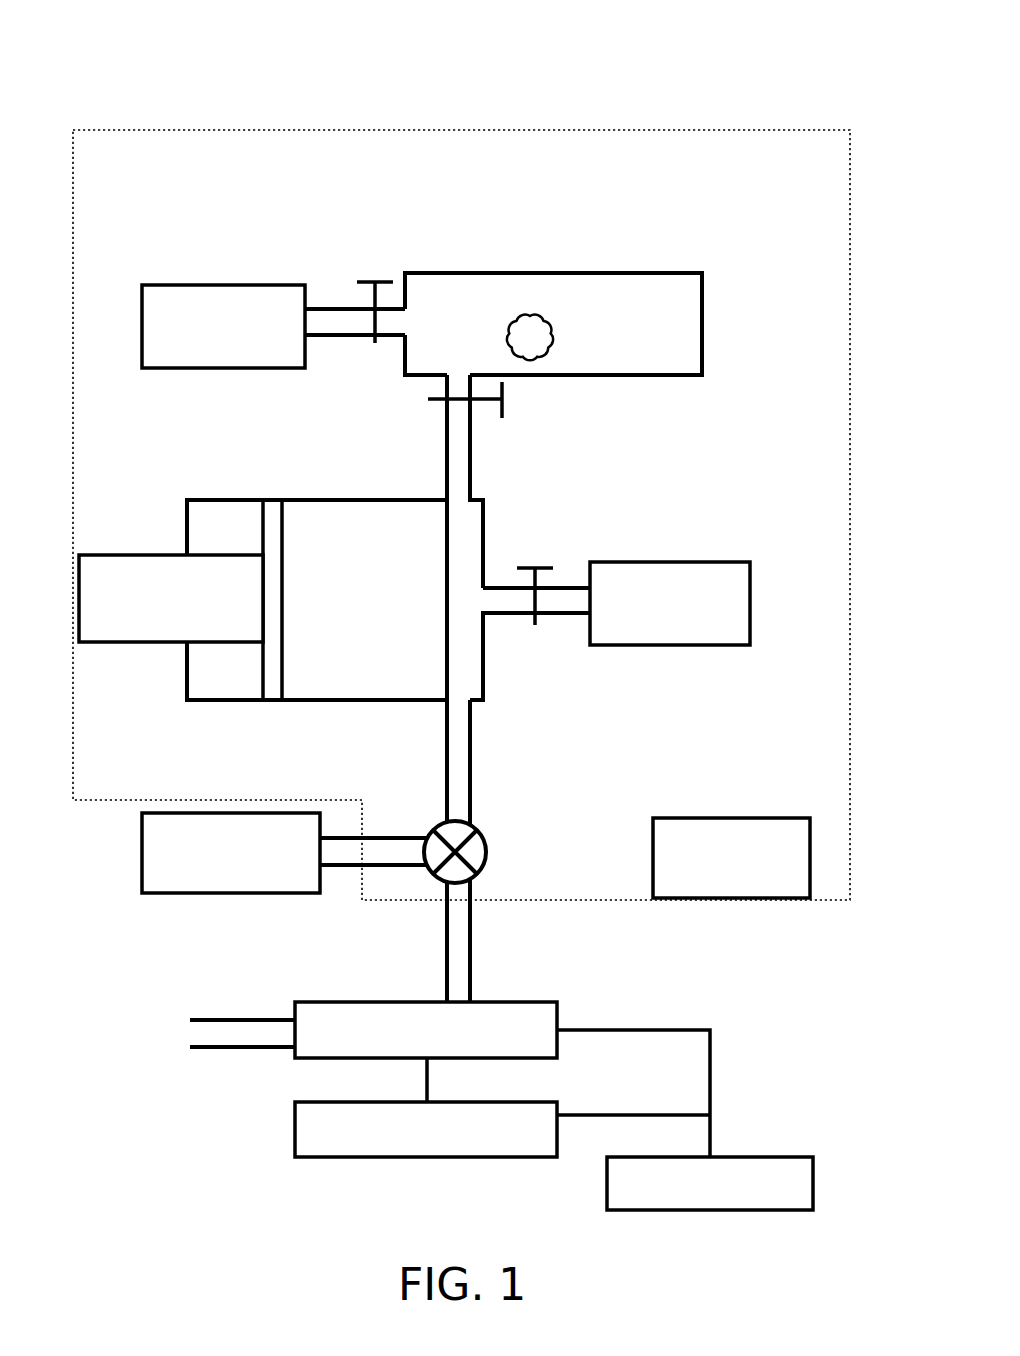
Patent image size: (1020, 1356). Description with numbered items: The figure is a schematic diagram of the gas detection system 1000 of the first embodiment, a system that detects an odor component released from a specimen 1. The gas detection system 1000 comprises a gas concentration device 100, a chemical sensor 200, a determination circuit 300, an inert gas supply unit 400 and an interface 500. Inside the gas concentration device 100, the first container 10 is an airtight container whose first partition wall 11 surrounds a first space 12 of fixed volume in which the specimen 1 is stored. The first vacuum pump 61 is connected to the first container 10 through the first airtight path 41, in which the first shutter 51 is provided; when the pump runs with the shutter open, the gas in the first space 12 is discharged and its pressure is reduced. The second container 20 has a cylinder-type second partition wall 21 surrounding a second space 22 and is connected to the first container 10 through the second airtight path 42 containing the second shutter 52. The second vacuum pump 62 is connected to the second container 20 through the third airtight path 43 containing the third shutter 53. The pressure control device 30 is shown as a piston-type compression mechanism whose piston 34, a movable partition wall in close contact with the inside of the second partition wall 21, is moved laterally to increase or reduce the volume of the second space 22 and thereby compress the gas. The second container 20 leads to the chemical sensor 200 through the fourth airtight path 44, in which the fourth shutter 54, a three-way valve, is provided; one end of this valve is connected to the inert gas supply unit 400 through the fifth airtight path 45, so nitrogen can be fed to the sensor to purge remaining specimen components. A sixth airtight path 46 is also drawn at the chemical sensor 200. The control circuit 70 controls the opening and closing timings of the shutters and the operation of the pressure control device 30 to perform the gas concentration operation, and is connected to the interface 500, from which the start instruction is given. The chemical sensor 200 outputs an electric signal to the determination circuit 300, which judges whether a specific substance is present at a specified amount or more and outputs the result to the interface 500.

The gas detection system 1000 is at (724, 63).
The gas concentration device 100 is at (155, 129).
The first container 10 is at (553, 294).
The first partition wall 11 is at (490, 272).
The first space 12 is at (585, 298).
The specimen 1 is at (545, 350).
The second container 20 is at (317, 597).
The second partition wall 21 is at (325, 500).
The second space 22 is at (362, 530).
The pressure control device 30 is at (140, 555).
The piston 34 is at (262, 700).
The first airtight path 41 is at (333, 305).
The second airtight path 42 is at (475, 477).
The third airtight path 43 is at (496, 622).
The fourth airtight path 44 is at (470, 745).
The fifth airtight path 45 is at (375, 866).
The sixth airtight path 46 is at (245, 1047).
The first shutter 51 is at (362, 280).
The second shutter 52 is at (505, 398).
The third shutter 53 is at (535, 625).
The fourth shutter 54 is at (487, 850).
The first vacuum pump 61 is at (170, 285).
The second vacuum pump 62 is at (658, 562).
The control circuit 70 is at (690, 818).
The chemical sensor 200 is at (558, 1002).
The determination circuit 300 is at (520, 1100).
The inert gas supply unit 400 is at (178, 895).
The interface 500 is at (605, 1185).